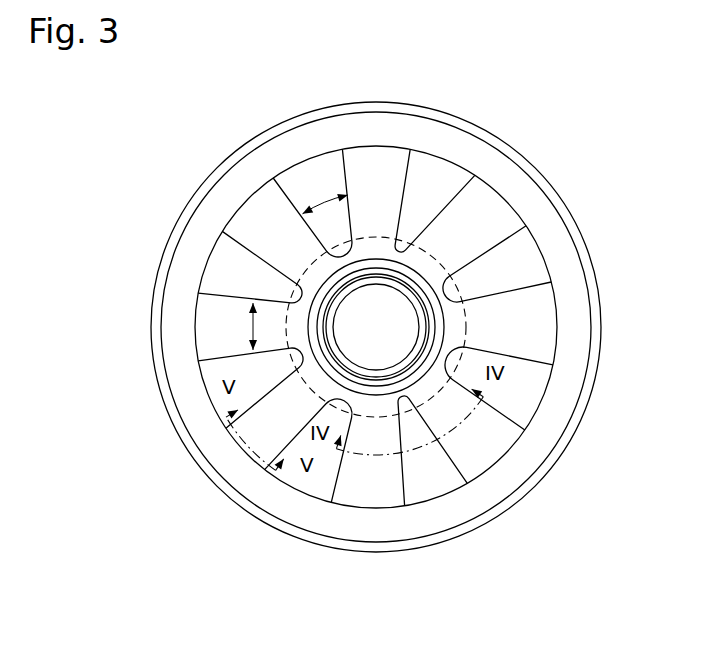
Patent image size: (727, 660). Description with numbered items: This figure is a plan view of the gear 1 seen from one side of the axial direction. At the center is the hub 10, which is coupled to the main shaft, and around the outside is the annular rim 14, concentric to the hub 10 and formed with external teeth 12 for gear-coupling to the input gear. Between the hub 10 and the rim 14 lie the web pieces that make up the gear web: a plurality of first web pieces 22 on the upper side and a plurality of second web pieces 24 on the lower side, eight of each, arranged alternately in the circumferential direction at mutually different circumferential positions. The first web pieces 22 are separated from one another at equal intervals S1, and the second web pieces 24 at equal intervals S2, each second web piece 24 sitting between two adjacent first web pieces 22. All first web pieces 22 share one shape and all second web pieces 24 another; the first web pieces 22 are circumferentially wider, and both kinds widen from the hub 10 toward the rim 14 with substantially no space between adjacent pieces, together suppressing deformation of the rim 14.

The gear 1 is at (573, 140).
The hub 10 is at (410, 283).
The external teeth 12 is at (580, 421).
The rim 14 is at (596, 372).
The first web pieces 22 is at (382, 165).
The second web pieces 24 is at (430, 182).
The intervals S1 is at (320, 196).
The intervals S2 is at (250, 325).